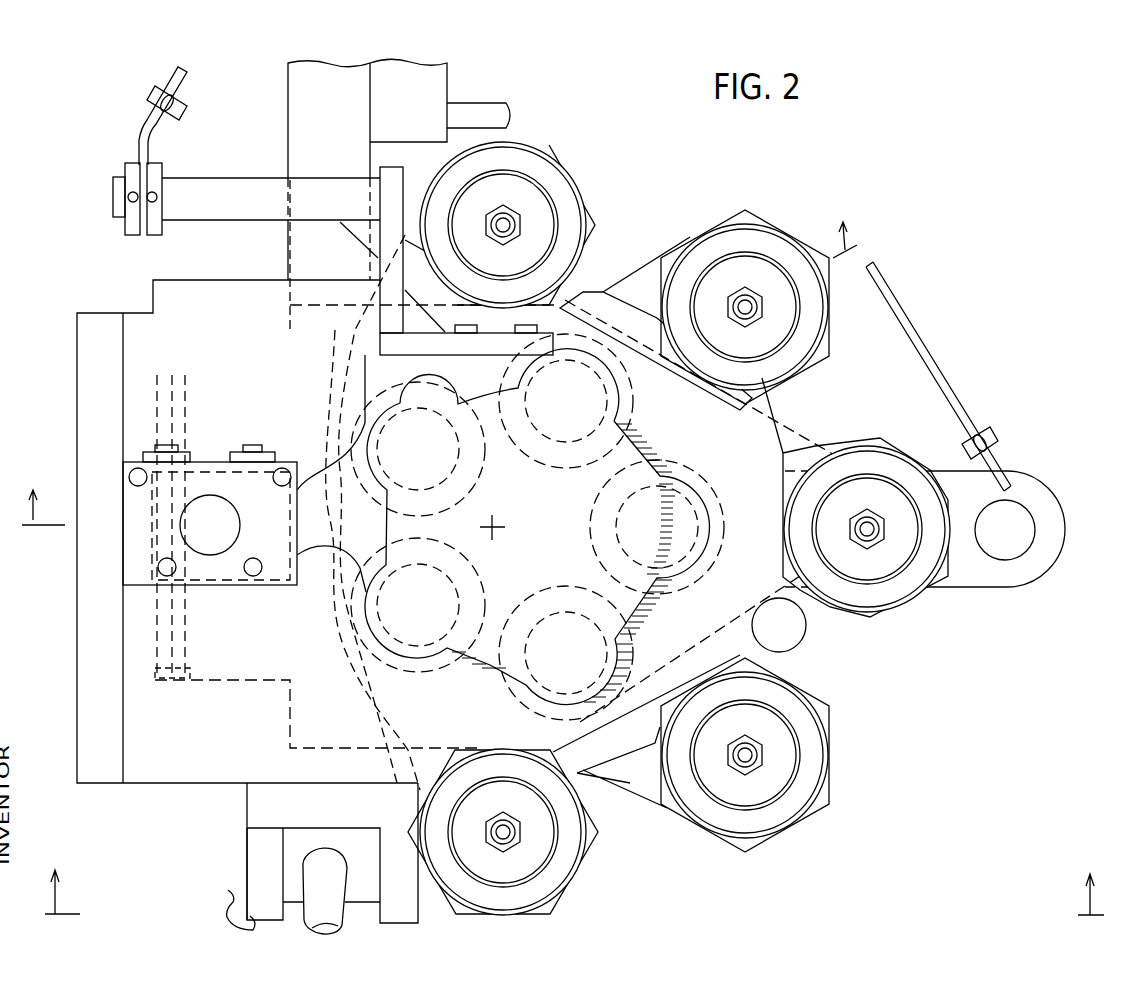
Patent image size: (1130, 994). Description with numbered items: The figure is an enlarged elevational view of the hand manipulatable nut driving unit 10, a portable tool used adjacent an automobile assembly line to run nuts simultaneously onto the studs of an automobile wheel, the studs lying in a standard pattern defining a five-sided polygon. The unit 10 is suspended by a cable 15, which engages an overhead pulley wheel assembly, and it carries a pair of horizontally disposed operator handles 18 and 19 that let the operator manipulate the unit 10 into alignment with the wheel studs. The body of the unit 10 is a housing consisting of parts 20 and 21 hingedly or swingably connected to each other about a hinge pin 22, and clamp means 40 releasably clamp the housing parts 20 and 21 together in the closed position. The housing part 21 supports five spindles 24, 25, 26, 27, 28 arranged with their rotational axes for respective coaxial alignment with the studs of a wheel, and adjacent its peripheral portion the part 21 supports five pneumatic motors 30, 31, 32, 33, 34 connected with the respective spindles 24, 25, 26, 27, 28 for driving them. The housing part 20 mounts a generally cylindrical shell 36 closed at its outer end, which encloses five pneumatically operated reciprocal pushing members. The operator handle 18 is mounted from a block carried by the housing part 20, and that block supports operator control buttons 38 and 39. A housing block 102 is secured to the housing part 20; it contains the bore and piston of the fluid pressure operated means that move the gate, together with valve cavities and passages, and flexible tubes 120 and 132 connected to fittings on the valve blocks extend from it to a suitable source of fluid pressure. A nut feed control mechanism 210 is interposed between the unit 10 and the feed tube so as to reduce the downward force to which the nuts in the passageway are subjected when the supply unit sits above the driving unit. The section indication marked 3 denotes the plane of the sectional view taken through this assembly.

The hand manipulatable nut driving unit 10 is at (87, 272).
The cable 15 is at (168, 78).
The operator handle 18 is at (218, 545).
The operator handle 19 is at (1002, 554).
The housing part 20 is at (240, 729).
The housing part 21 is at (625, 776).
The hinge pin 22 is at (175, 677).
The spindle 24 is at (432, 612).
The spindle 25 is at (580, 665).
The spindle 26 is at (671, 539).
The spindle 27 is at (580, 413).
The spindle 28 is at (432, 461).
The pneumatic motor 30 is at (570, 882).
The pneumatic motor 31 is at (795, 805).
The pneumatic motor 32 is at (860, 460).
The pneumatic motor 33 is at (695, 250).
The pneumatic motor 34 is at (549, 168).
The cylindrical shell 36 is at (470, 660).
The operator control button 38 is at (142, 449).
The operator control button 39 is at (258, 446).
The clamp means 40 is at (792, 637).
The housing block 102 is at (250, 860).
The flexible tube 120 is at (325, 875).
The flexible tube 132 is at (228, 890).
The nut feed control mechanism 210 is at (468, 96).
The section line 3- 3 is at (574, 877).